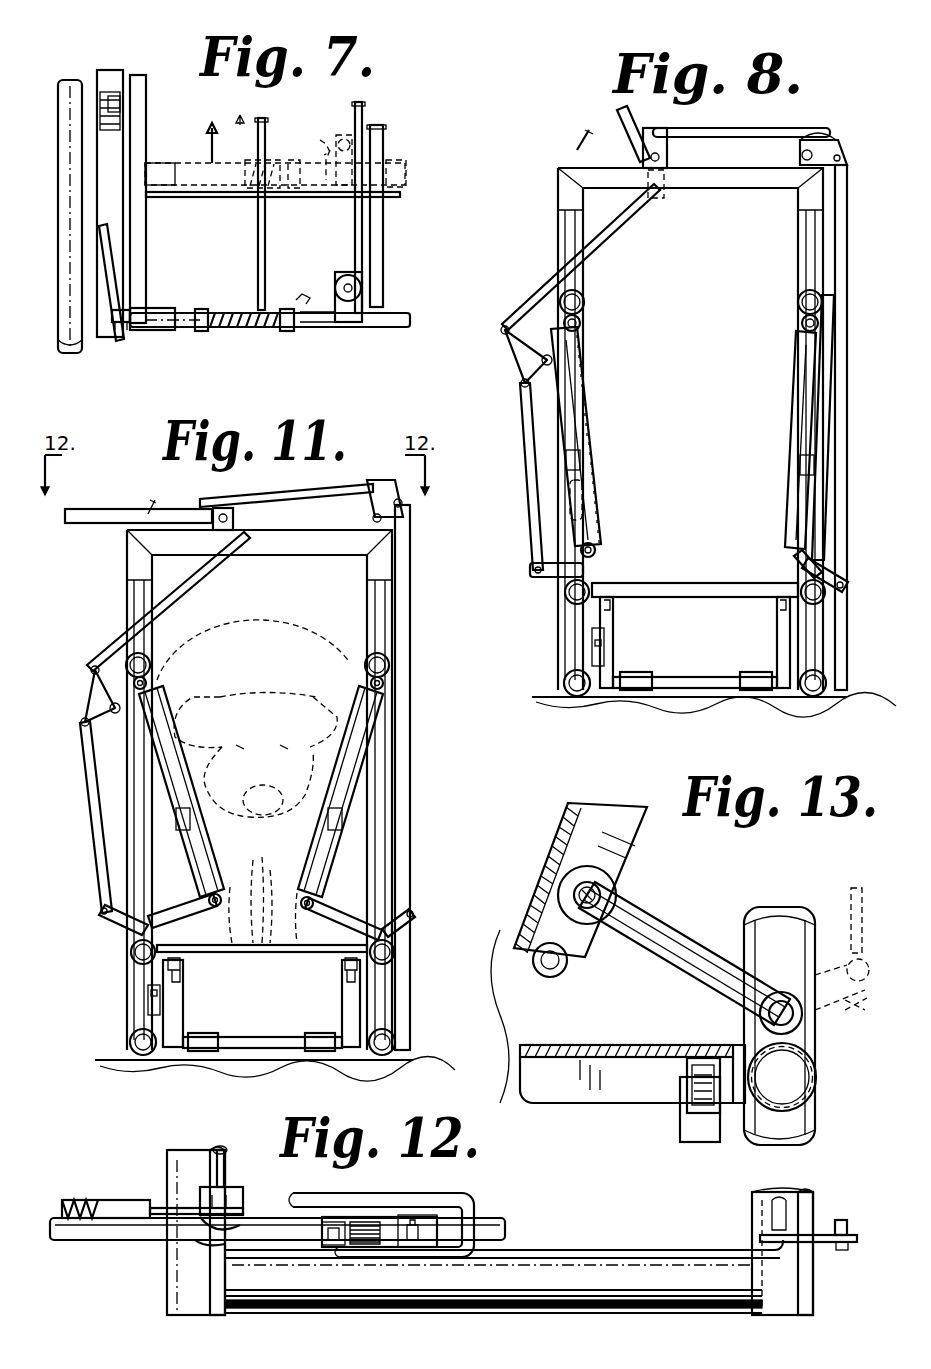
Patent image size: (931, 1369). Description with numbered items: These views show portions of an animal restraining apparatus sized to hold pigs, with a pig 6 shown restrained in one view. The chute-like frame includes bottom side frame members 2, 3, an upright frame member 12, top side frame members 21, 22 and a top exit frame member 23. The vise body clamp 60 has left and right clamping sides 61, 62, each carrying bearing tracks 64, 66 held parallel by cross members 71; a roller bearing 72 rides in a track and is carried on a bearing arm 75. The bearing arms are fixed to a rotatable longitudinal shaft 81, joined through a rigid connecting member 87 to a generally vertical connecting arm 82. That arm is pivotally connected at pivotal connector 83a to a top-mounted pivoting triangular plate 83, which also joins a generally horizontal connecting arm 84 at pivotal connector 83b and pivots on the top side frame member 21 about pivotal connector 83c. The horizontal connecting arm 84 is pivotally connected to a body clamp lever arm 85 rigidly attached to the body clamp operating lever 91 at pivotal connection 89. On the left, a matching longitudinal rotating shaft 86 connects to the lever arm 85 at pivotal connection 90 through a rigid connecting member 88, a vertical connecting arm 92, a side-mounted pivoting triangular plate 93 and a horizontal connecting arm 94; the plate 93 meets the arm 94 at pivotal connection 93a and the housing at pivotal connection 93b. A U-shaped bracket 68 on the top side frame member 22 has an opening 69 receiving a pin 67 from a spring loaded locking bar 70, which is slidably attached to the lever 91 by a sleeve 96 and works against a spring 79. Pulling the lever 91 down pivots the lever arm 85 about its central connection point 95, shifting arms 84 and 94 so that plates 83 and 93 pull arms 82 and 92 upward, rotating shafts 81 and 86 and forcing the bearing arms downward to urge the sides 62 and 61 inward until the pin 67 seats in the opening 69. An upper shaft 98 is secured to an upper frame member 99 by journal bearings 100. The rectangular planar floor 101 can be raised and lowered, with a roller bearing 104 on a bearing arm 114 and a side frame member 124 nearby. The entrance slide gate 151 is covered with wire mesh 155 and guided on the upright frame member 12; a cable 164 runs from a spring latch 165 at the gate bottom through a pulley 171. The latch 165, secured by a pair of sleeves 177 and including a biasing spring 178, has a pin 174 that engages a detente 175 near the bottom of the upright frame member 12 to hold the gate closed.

In FIG. 8, the bottom side frame member 2 is at (826, 678).
In FIG. 11, the bottom side frame member 2 is at (393, 1050).
In FIG. 8, the bottom side frame member 3 is at (564, 680).
In FIG. 11, the bottom side frame member 3 is at (130, 1039).
In FIG. 11, the pig 6 is at (258, 684).
In FIG. 7, the upright frame member 12 is at (62, 332).
In FIG. 12, the top side frame member 21 is at (752, 1213).
In FIG. 12, the top side frame member 22 is at (172, 1272).
In FIG. 12, the top exit frame member 23 is at (460, 1325).
In FIG. 8, the vise body clamp 60 is at (542, 447).
In FIG. 11, the vise body clamp 60 is at (104, 801).
In FIG. 8, the left clamping side 61 is at (588, 442).
In FIG. 11, the left clamping side 61 is at (182, 788).
In FIG. 8, the right clamping side 62 is at (796, 442).
In FIG. 11, the right clamping side 62 is at (347, 750).
In FIG. 8, the bearing track 64 is at (830, 380).
In FIG. 13, the bearing track 64 is at (622, 856).
In FIG. 8, the bearing track 66 is at (566, 514).
In FIG. 11, the bearing track 66 is at (190, 895).
In FIG. 13, the bearing track 66 is at (675, 977).
In FIG. 12, the pin 67 is at (252, 1228).
In FIG. 12, the U-shaped bracket 68 is at (243, 1193).
In FIG. 12, the opening 69 is at (226, 1180).
In FIG. 12, the spring loaded locking bar 70 is at (205, 1244).
In FIG. 8, the cross members 71 is at (582, 462).
In FIG. 11, the cross members 71 is at (182, 832).
In FIG. 13, the roller bearing 72 is at (612, 886).
In FIG. 11, the bearing arm 75 is at (350, 918).
In FIG. 13, the bearing arm 75 is at (692, 933).
In FIG. 12, the spring 79 is at (78, 1200).
In FIG. 8, the rotatable longitudinal shaft 81 is at (822, 602).
In FIG. 11, the rotatable longitudinal shaft 81 is at (392, 962).
In FIG. 13, the rotatable longitudinal shaft 81 is at (812, 1095).
In FIG. 8, the vertical connecting arm 82 is at (847, 420).
In FIG. 11, the vertical connecting arm 82 is at (410, 758).
In FIG. 13, the vertical connecting arm 82 is at (848, 906).
In FIG. 12, the vertical connecting arm 82 is at (842, 1220).
In FIG. 8, the top-mounted pivoting triangular plate 83 is at (830, 135).
In FIG. 11, the top-mounted pivoting triangular plate 83 is at (403, 510).
In FIG. 12, the top-mounted pivoting triangular plate 83 is at (862, 1236).
In FIG. 8, the pivotal connector 83a is at (840, 162).
In FIG. 8, the pivotal connector 83b is at (830, 135).
In FIG. 8, the pivotal connector 83c is at (800, 154).
In FIG. 8, the horizontal connecting arm 84 is at (796, 135).
In FIG. 11, the horizontal connecting arm 84 is at (340, 496).
In FIG. 12, the horizontal connecting arm 84 is at (626, 1254).
In FIG. 8, the body clamp lever arm 85 is at (668, 142).
In FIG. 11, the body clamp lever arm 85 is at (208, 508).
In FIG. 12, the body clamp lever arm 85 is at (504, 1232).
In FIG. 8, the longitudinal rotating shaft 86 is at (588, 567).
In FIG. 8, the rigid connecting member 87 is at (836, 594).
In FIG. 11, the rigid connecting member 87 is at (408, 925).
In FIG. 13, the rigid connecting member 87 is at (800, 1022).
In FIG. 8, the rigid connecting member 88 is at (533, 552).
In FIG. 11, the rigid connecting member 88 is at (112, 928).
In FIG. 8, the pivotal connection 89 is at (660, 130).
In FIG. 8, the pivotal connection 90 is at (674, 188).
In FIG. 8, the body clamp operating lever 91 is at (622, 114).
In FIG. 11, the body clamp operating lever 91 is at (96, 526).
In FIG. 12, the body clamp operating lever 91 is at (103, 1241).
In FIG. 8, the vertical connecting arm 92 is at (528, 490).
In FIG. 11, the vertical connecting arm 92 is at (95, 846).
In FIG. 8, the side-mounted pivoting triangular plate 93 is at (512, 360).
In FIG. 11, the side-mounted pivoting triangular plate 93 is at (92, 682).
In FIG. 8, the pivotal connection 93a is at (505, 325).
In FIG. 8, the pivotal connection 93b is at (552, 362).
In FIG. 8, the horizontal connecting arm 94 is at (614, 222).
In FIG. 11, the horizontal connecting arm 94 is at (196, 583).
In FIG. 12, the horizontal connecting arm 94 is at (436, 1193).
In FIG. 8, the central connection point 95 is at (643, 160).
In FIG. 12, the sleeve 96 is at (118, 1198).
In FIG. 8, the upper shaft 98 is at (580, 322).
In FIG. 11, the upper shaft 98 is at (370, 683).
In FIG. 8, the upper frame member 99 is at (584, 292).
In FIG. 11, the upper frame member 99 is at (389, 660).
In FIG. 8, the journal bearings 100 is at (800, 316).
In FIG. 11, the journal bearings 100 is at (147, 682).
In FIG. 11, the rectangular planar floor 101 is at (209, 948).
In FIG. 13, the rectangular planar floor 101 is at (626, 1046).
In FIG. 11, the roller bearing 104 is at (180, 974).
In FIG. 13, the roller bearing 104 is at (690, 1070).
In FIG. 11, the bearing arm 114 is at (183, 1007).
In FIG. 13, the bearing arm 114 is at (685, 1132).
In FIG. 8, the side frame member 124 is at (565, 598).
In FIG. 11, the side frame member 124 is at (133, 962).
In FIG. 13, the side frame member 124 is at (812, 1068).
In FIG. 7, the slide gate 151 is at (383, 205).
In FIG. 7, the wire mesh 155 is at (258, 208).
In FIG. 7, the cable 164 is at (355, 222).
In FIG. 7, the spring latch 165 is at (293, 160).
In FIG. 7, the pulley 171 is at (338, 276).
In FIG. 7, the pin 174 is at (120, 330).
In FIG. 7, the detente 175 is at (115, 262).
In FIG. 7, the sleeves 177 is at (201, 309).
In FIG. 7, the biasing spring 178 is at (246, 328).